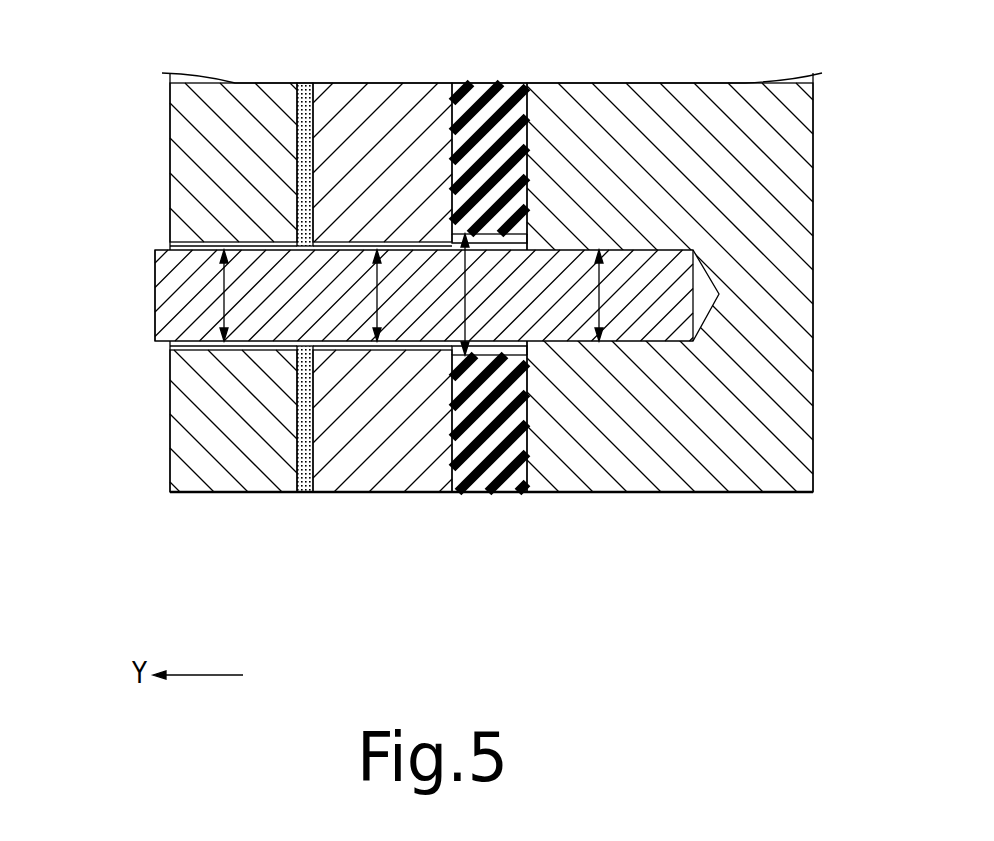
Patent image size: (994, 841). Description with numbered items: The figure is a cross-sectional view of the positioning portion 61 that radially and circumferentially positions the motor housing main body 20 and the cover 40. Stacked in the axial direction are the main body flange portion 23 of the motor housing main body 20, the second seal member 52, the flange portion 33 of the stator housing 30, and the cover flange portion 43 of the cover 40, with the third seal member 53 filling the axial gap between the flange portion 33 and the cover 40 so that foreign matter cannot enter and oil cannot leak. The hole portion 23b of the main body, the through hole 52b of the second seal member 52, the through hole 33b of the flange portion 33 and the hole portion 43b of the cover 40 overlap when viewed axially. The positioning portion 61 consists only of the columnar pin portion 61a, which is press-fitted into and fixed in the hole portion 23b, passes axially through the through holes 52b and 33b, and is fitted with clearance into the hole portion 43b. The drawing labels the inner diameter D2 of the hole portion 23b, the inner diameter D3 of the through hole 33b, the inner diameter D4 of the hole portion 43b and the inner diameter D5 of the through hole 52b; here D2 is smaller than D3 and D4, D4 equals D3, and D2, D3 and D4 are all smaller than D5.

The motor housing main body 20 is at (670, 357).
The main body flange portion 23 is at (758, 462).
The hole portion 23b is at (637, 340).
The stator housing 30 is at (383, 357).
The flange portion 33 is at (355, 462).
The through hole 33b is at (398, 345).
The cover 40 is at (251, 361).
The cover flange portion 43 is at (192, 463).
The hole portion 43b is at (241, 345).
The second seal member 52 is at (482, 463).
The through hole 52b is at (485, 350).
The third seal member 53 is at (305, 493).
The positioning portion 61 is at (383, 315).
The pin portion 61a is at (168, 293).
The inner diameter of the hole portion 43b D4 is at (226, 288).
The inner diameter of the through hole 33b D3 is at (378, 288).
The inner diameter of the through hole 52b D5 is at (467, 288).
The inner diameter of the hole portion 23b D2 is at (601, 288).